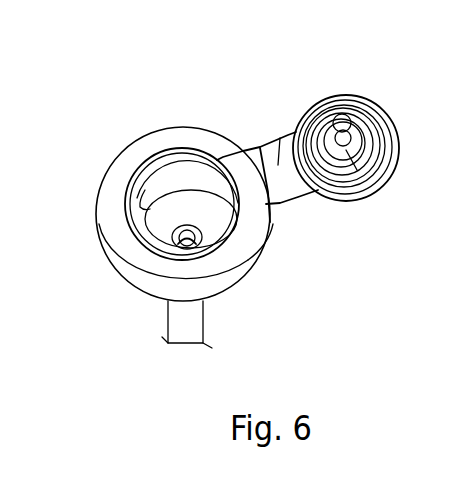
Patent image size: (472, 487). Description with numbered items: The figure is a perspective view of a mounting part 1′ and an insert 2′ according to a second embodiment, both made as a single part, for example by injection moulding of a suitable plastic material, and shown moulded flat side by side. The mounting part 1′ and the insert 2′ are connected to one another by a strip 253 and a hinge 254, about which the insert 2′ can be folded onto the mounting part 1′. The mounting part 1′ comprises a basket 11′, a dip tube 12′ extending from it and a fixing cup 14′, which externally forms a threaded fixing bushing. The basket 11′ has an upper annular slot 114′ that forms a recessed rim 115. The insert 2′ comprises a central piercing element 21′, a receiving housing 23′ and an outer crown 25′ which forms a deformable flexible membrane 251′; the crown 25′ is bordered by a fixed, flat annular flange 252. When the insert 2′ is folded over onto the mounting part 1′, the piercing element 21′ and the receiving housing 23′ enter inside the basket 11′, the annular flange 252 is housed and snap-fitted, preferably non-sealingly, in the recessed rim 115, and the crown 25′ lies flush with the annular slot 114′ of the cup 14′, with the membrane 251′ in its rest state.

The mounting part 1′ is at (146, 100).
The recessed rim 115 is at (134, 180).
The basket 11′ is at (133, 208).
The fixing cup 14′ is at (127, 268).
The dip tube 12′ is at (185, 321).
The upper annular slot 114′ is at (227, 249).
The hinge 254 is at (260, 147).
The strip 253 is at (280, 137).
The fixed annular flange 252 is at (314, 192).
The insert 2′ is at (343, 70).
The outer crown 25′ is at (398, 103).
The piercing element 21′ is at (352, 96).
The deformable flexible membrane 251′ is at (396, 172).
The receiving housing 23′ is at (365, 105).